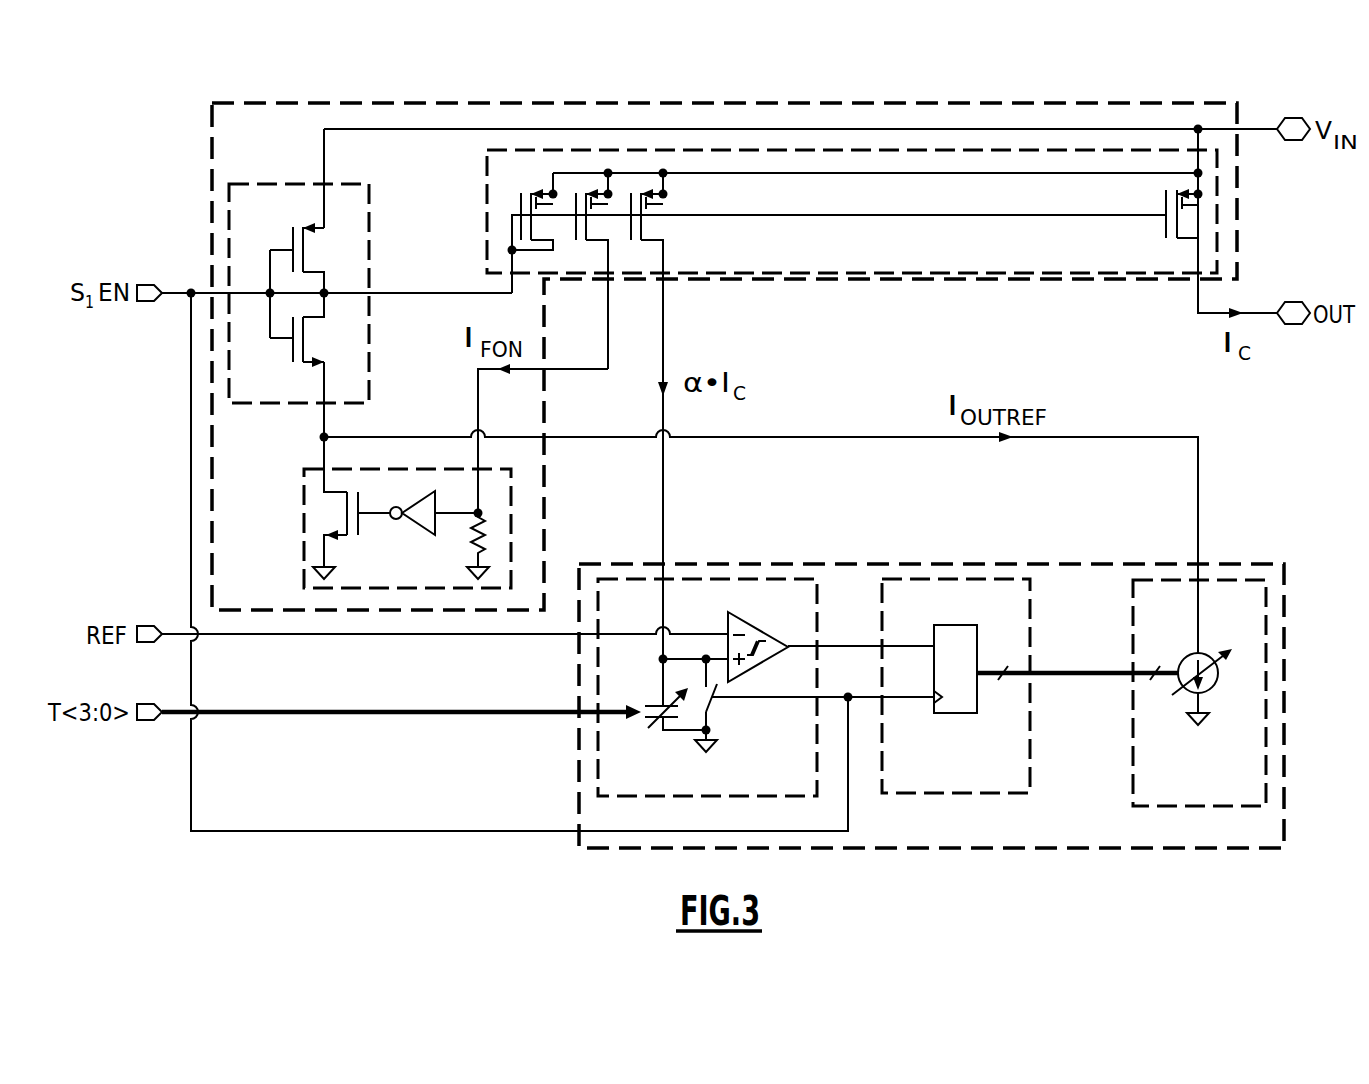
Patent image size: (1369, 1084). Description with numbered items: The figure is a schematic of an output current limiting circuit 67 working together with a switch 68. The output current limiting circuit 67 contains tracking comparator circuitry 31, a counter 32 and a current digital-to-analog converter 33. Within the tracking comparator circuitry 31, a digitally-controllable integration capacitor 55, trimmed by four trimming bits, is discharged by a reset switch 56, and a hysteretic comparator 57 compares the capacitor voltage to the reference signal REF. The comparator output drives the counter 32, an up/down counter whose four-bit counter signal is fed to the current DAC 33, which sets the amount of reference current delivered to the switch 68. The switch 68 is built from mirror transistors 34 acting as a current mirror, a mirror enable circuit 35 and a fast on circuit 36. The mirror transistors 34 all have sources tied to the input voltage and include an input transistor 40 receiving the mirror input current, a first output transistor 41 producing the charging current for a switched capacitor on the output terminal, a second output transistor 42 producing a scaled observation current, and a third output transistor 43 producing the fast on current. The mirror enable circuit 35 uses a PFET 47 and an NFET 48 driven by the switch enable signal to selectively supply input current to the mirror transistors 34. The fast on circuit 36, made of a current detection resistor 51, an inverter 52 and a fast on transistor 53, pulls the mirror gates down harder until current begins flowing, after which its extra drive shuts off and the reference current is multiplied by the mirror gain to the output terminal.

The switch 68 is at (330, 103).
The mirror enable circuit 35 is at (369, 218).
The p-type field effect transistor 47 is at (293, 233).
The n-type field effect transistor 48 is at (293, 357).
The mirror transistors 34 is at (784, 280).
The input transistor 40 is at (516, 203).
The third output transistor 43 is at (573, 197).
The second output transistor 42 is at (645, 229).
The first output transistor 41 is at (1163, 205).
The fast on circuit 36 is at (304, 553).
The fast on transistor 53 is at (347, 527).
The inverter 52 is at (425, 505).
The current detection resistor 51 is at (490, 545).
The output current limiting circuit 67 is at (1284, 680).
The tracking comparator circuitry 31 is at (598, 757).
The hysteretic comparator 57 is at (750, 613).
The digitally-controllable integration capacitor 55 is at (652, 705).
The reset switch 56 is at (716, 698).
The counter 32 is at (955, 793).
The current digital-to-analog converter 33 is at (1133, 780).